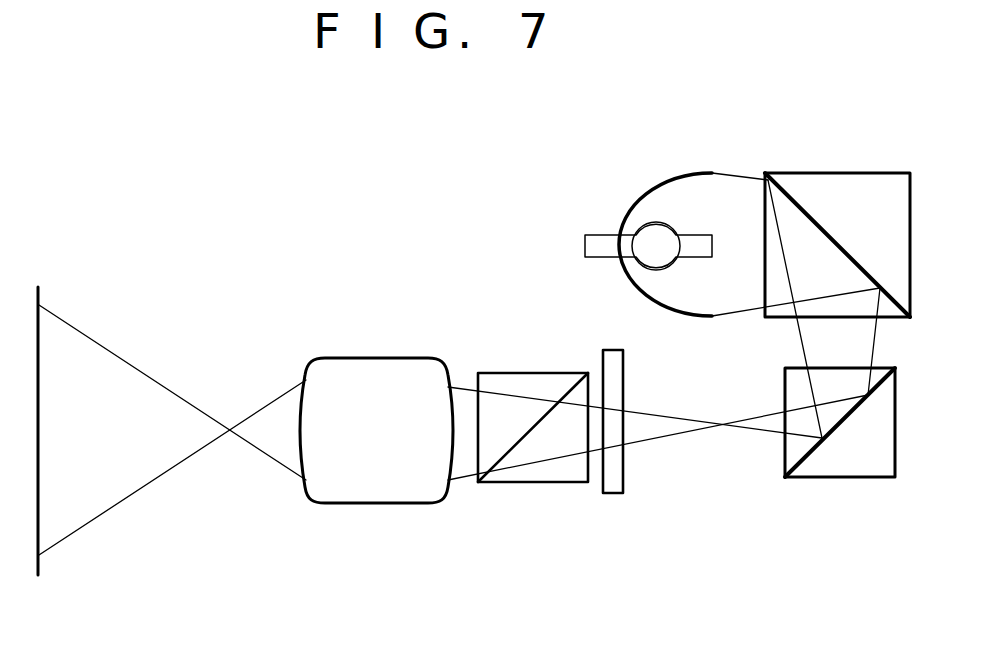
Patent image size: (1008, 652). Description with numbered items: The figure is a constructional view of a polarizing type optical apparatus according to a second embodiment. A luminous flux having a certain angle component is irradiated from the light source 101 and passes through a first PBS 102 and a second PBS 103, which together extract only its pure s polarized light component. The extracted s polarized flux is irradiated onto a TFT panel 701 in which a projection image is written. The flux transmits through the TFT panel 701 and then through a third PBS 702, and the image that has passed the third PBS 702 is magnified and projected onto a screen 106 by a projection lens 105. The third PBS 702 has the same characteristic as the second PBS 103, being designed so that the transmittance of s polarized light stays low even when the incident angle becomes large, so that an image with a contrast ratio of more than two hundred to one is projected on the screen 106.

The light source 101 is at (648, 185).
The first PBS 102 is at (825, 173).
The second PBS 103 is at (843, 478).
The projection lens 105 is at (363, 503).
The screen 106 is at (42, 572).
The TFT panel 701 is at (615, 495).
The third PBS 702 is at (517, 373).